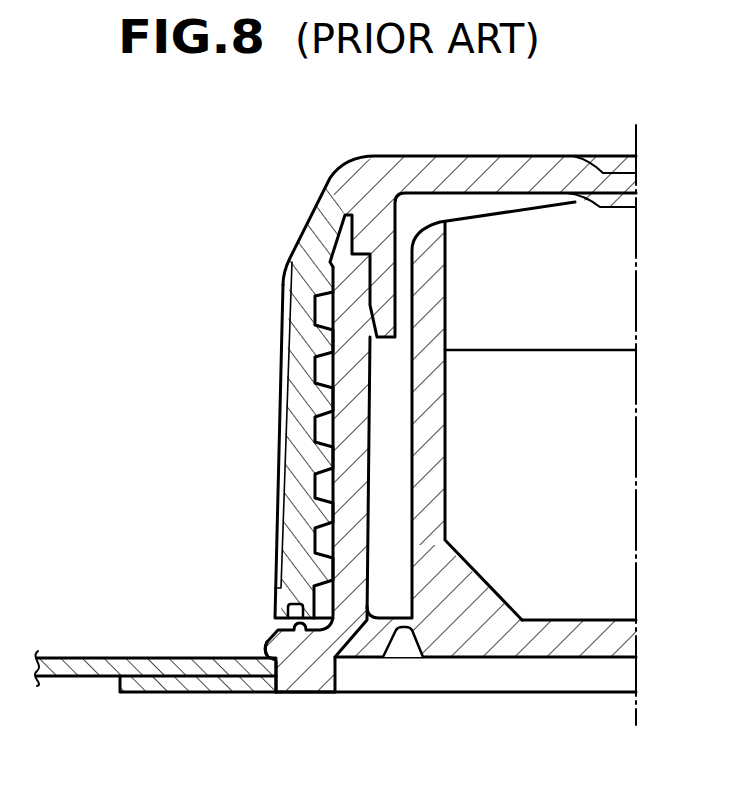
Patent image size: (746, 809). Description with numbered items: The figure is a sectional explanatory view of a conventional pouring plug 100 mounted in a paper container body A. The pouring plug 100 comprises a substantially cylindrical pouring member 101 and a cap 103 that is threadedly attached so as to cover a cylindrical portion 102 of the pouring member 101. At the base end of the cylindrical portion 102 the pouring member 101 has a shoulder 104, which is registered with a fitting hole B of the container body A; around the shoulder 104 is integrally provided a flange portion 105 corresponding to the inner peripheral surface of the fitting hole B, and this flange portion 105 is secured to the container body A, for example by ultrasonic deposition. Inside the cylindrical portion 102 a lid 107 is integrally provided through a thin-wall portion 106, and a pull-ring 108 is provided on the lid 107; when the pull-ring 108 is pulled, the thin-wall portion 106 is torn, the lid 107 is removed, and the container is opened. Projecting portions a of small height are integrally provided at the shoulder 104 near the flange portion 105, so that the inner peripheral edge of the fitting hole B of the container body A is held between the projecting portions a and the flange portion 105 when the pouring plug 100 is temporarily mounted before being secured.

The pouring plug 100 is at (250, 393).
The pouring member 101 is at (370, 535).
The cylindrical portion 102 is at (357, 422).
The cap 103 is at (283, 283).
The shoulder 104 is at (300, 628).
The flange portion 105 is at (147, 690).
The thin-wall portion 106 is at (408, 628).
The lid 107 is at (590, 630).
The pull-ring 108 is at (600, 325).
The container body A is at (73, 658).
The projecting portions a is at (268, 648).
The fitting hole B is at (278, 662).